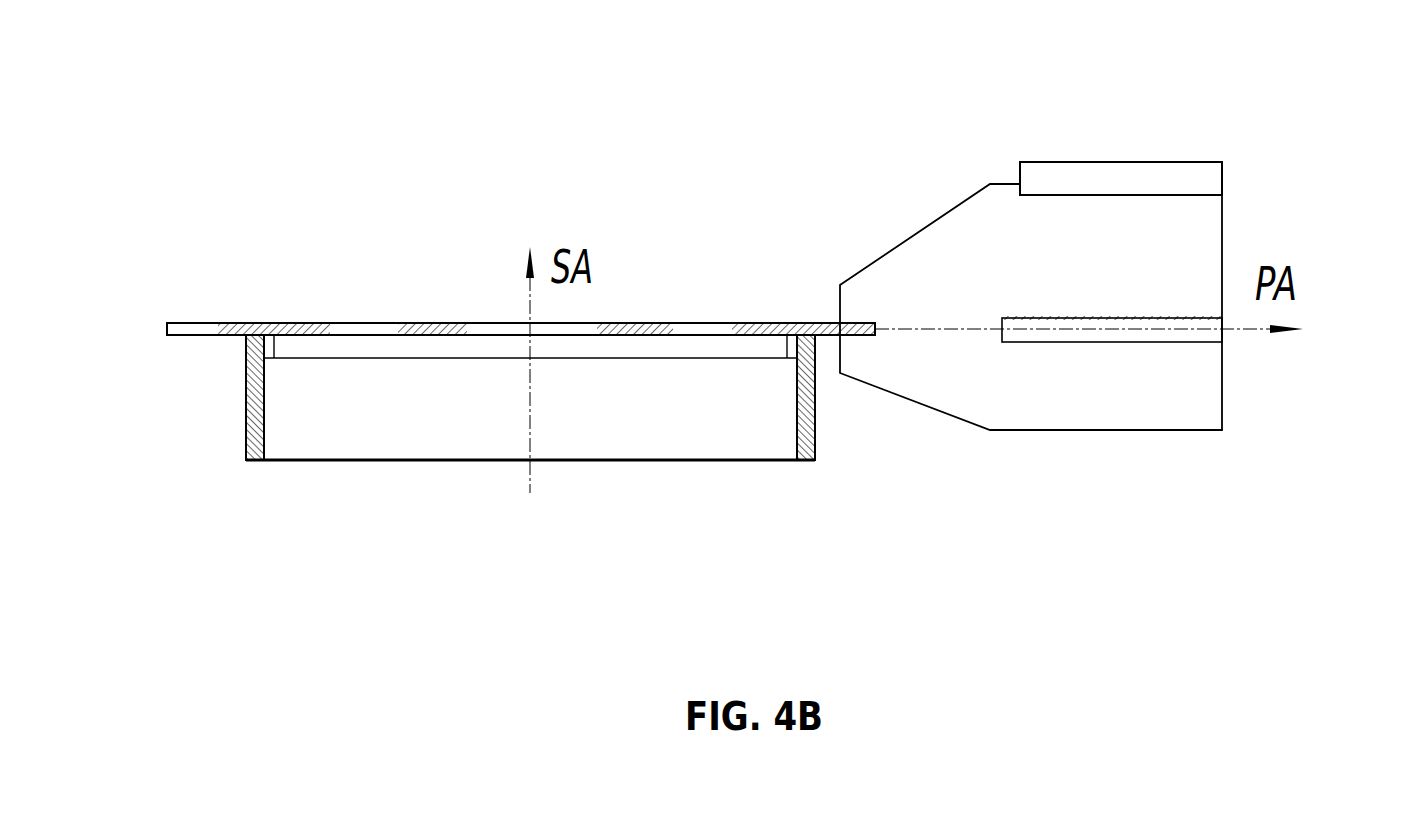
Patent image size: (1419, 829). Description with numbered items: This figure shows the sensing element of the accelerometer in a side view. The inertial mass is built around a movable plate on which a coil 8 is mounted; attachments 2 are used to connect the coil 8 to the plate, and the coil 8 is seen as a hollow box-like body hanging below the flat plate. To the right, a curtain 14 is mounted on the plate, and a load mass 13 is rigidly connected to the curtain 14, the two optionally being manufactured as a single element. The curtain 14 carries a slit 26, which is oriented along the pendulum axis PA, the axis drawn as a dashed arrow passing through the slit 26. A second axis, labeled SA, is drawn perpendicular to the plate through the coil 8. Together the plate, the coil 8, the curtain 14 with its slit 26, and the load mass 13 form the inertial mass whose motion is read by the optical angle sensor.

The attachments 2 is at (480, 396).
The coil 8 is at (574, 446).
The load mass 13 is at (1156, 112).
The curtain 14 is at (1096, 284).
The slit 26 is at (1200, 379).